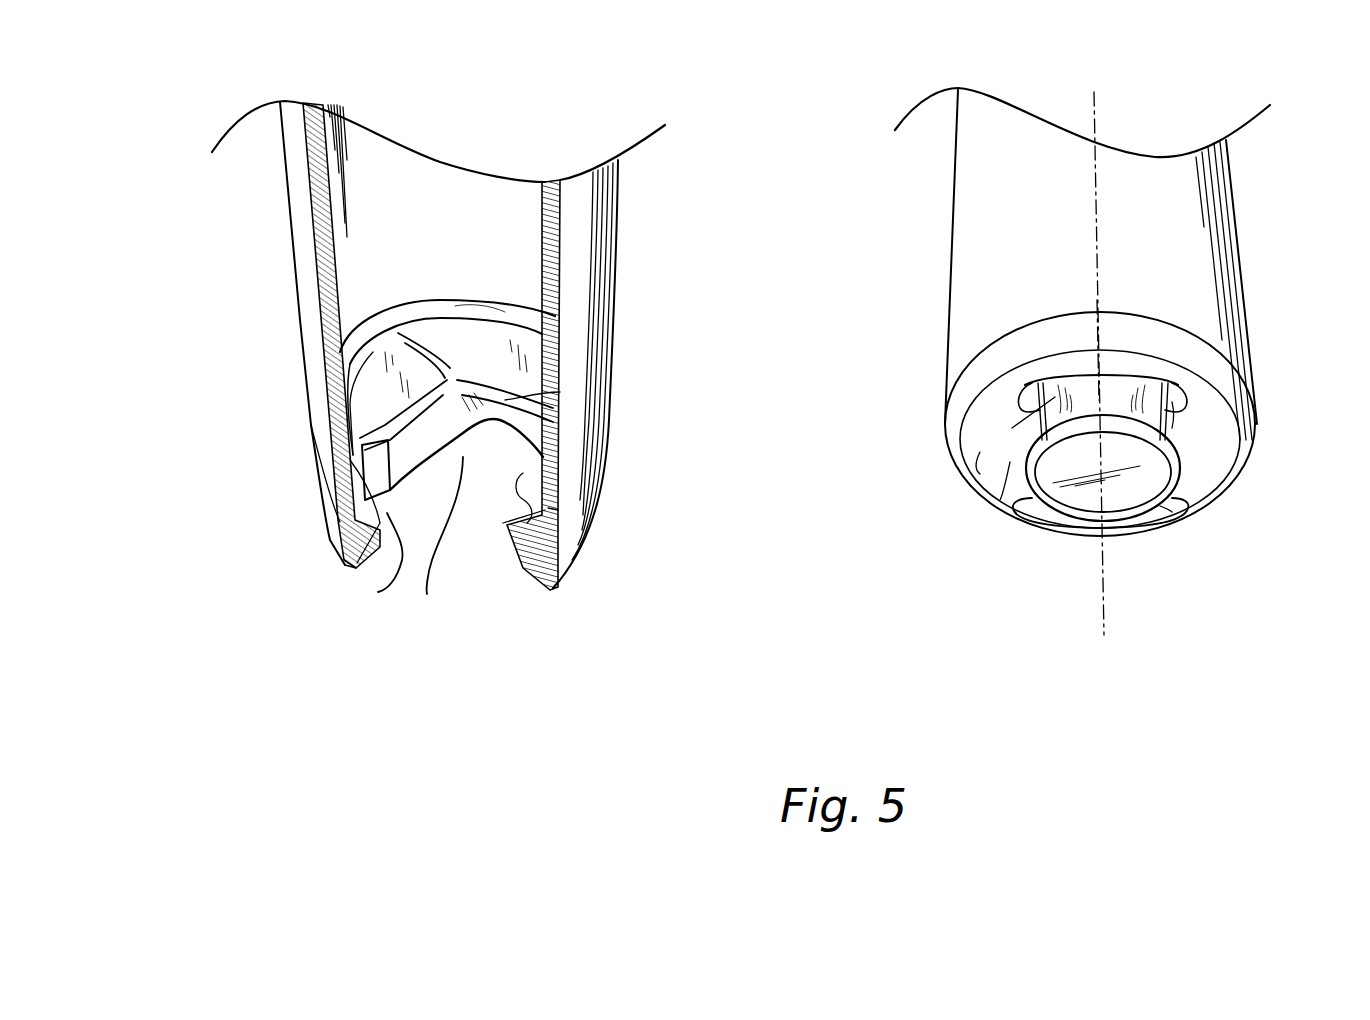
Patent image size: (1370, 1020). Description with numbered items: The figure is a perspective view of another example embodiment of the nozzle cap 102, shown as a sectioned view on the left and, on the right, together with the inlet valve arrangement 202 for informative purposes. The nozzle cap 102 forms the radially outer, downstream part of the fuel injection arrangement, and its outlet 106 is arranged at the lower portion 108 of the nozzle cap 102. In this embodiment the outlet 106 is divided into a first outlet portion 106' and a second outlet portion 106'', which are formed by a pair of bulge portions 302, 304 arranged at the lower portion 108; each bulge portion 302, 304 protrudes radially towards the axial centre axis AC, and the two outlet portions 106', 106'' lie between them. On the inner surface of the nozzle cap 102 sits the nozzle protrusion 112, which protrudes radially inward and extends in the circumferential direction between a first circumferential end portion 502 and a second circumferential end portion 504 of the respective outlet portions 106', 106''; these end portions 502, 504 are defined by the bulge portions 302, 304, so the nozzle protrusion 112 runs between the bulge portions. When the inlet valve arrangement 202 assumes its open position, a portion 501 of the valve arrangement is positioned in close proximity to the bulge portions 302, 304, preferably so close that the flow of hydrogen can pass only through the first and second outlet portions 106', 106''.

The nozzle cap 102 is at (578, 502).
The outlet 106 is at (420, 567).
The first outlet portion 106' is at (1193, 562).
The second outlet portion 106'' is at (1263, 403).
The lower portion 108 is at (357, 565).
The nozzle protrusion 112 is at (505, 400).
The inlet valve arrangement 202 is at (1025, 393).
The bulge portion 302 is at (1010, 462).
The bulge portion 304 is at (507, 523).
The portion of the valve arrangement 501 is at (1172, 417).
The first circumferential end portion 502 is at (457, 380).
The second circumferential end portion 504 is at (1170, 413).
The axial centre axis AC is at (1103, 603).